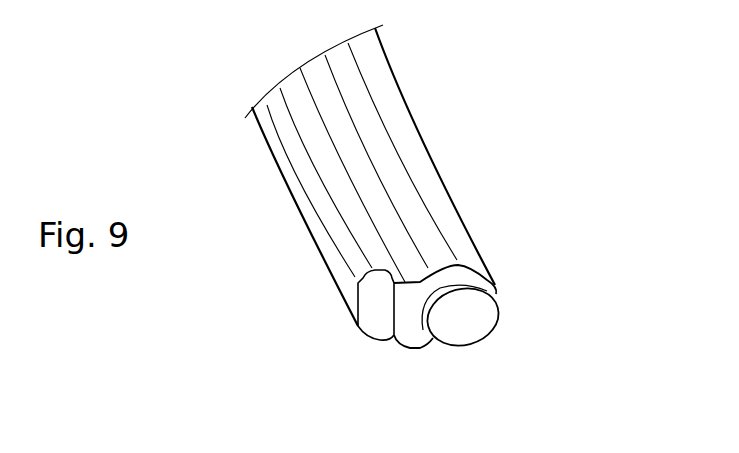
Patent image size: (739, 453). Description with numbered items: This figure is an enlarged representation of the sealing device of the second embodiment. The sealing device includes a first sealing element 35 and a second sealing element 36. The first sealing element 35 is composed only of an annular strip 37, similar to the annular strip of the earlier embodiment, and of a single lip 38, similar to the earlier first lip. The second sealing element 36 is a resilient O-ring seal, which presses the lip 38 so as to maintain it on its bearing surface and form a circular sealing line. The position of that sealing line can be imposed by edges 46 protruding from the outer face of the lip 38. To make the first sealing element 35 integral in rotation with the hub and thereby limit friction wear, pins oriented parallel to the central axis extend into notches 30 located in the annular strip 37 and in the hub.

The first sealing element 35 is at (271, 261).
The lip 38 is at (461, 213).
The edges 46 is at (408, 173).
The notches 30 is at (363, 323).
The annular strip 37 is at (383, 341).
The second sealing element 36 is at (488, 336).